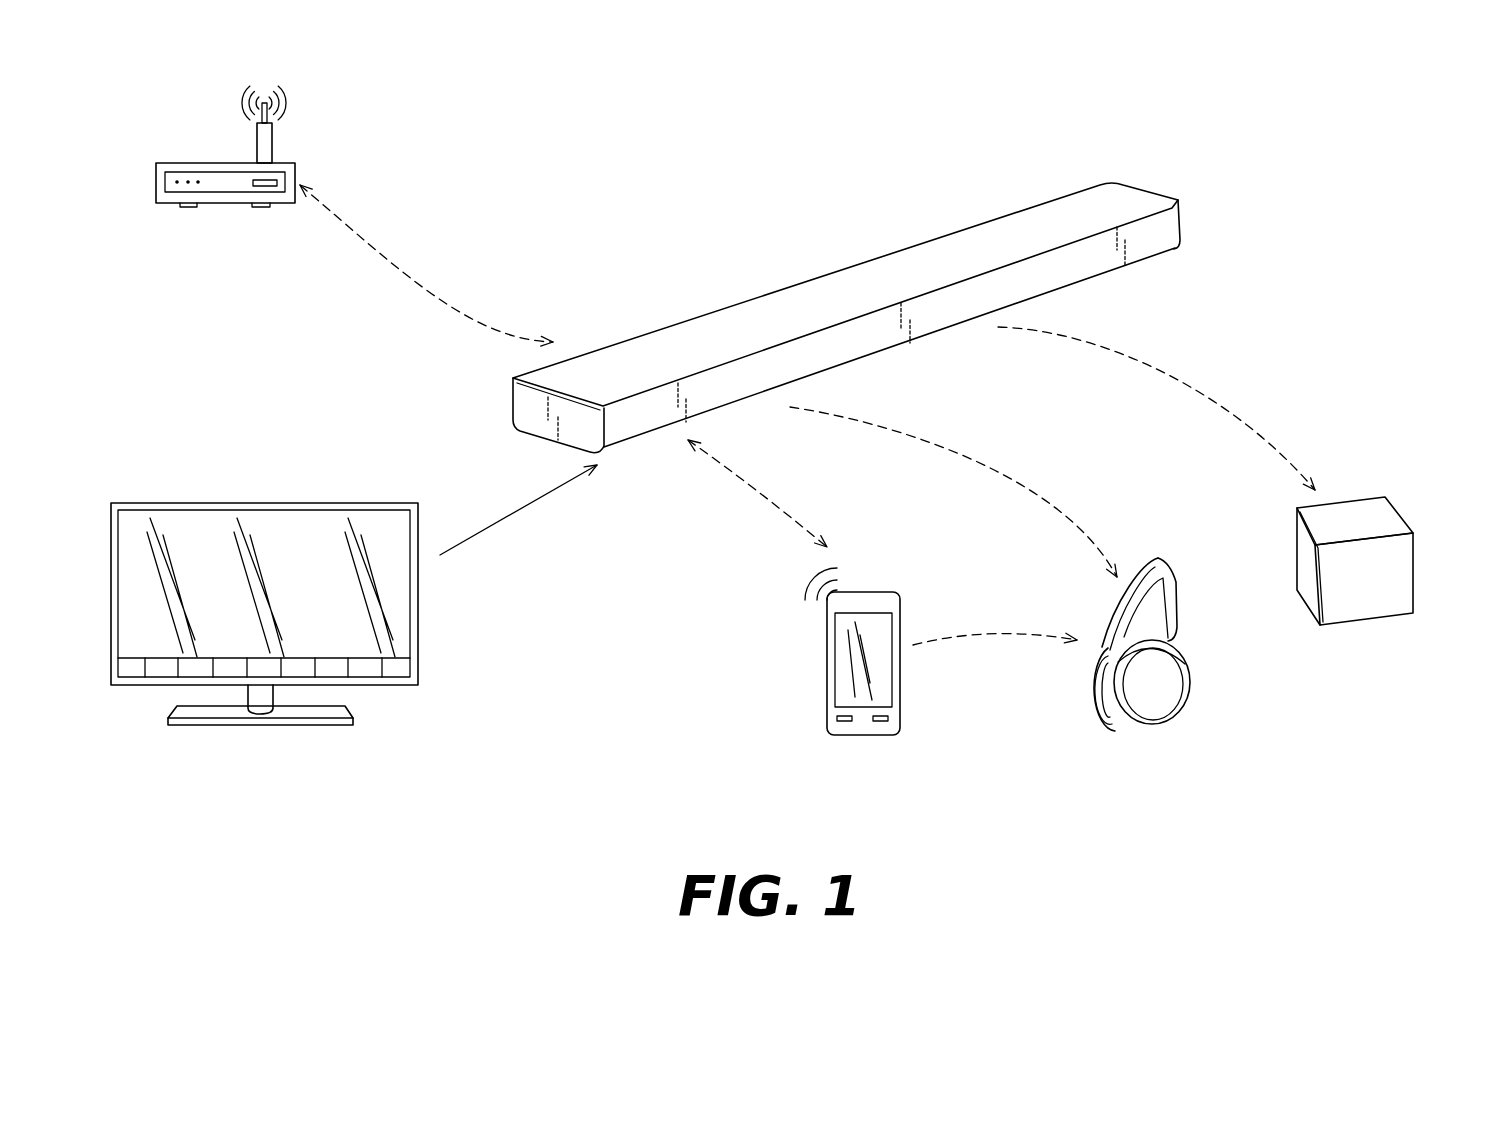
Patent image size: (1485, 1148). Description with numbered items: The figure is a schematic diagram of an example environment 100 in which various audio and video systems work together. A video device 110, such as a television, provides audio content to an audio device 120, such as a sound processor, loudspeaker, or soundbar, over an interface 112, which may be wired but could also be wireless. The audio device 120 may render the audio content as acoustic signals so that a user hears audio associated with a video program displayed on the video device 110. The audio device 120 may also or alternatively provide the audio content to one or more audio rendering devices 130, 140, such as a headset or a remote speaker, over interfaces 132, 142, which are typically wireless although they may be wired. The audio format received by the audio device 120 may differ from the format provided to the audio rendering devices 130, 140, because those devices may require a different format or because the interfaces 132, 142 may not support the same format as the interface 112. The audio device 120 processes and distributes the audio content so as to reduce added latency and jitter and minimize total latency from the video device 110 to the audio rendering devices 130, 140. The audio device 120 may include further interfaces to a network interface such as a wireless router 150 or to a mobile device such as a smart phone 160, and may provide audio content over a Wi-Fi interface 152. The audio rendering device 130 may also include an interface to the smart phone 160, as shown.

The environment 100 is at (1215, 129).
The video device 110 is at (317, 503).
The interface 112 is at (523, 508).
The audio device 120 is at (1037, 207).
The audio rendering device 130 is at (1167, 723).
The interface 132 is at (988, 465).
The audio rendering device 140 is at (1360, 623).
The interface 142 is at (1170, 370).
The wireless router 150 is at (219, 204).
The interface 152 is at (397, 270).
The smart phone 160 is at (852, 737).